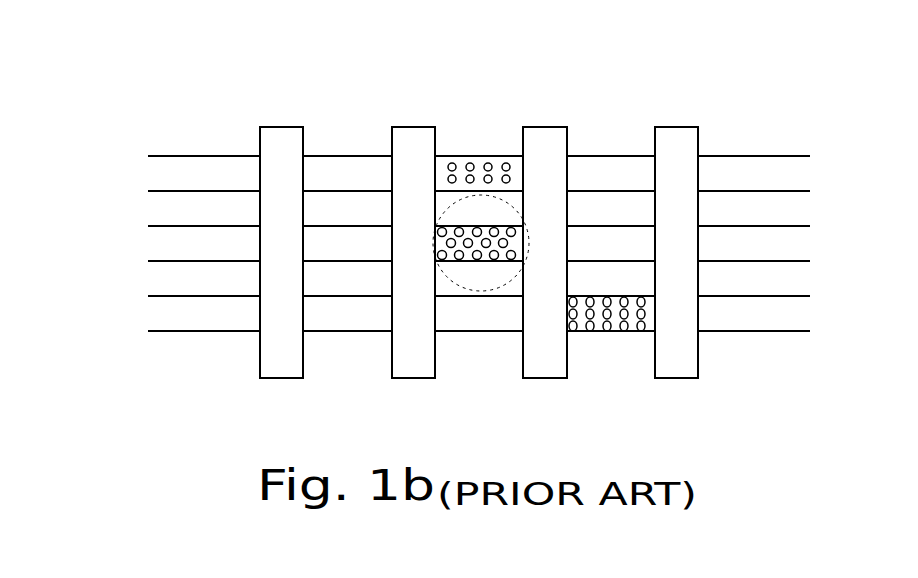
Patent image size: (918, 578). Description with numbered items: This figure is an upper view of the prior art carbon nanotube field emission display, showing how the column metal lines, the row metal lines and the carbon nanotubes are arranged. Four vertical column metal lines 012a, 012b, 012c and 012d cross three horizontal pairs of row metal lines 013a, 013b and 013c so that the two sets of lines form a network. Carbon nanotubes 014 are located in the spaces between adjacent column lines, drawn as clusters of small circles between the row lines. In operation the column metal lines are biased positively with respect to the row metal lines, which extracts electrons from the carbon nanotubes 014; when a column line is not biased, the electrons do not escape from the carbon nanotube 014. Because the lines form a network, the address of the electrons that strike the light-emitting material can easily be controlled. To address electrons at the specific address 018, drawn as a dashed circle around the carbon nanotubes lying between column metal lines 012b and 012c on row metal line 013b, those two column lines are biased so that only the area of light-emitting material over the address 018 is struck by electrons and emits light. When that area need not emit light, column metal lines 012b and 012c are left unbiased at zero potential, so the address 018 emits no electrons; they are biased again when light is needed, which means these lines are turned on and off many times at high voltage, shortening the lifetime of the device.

The column metal line 012a is at (284, 142).
The column metal line 012b is at (415, 142).
The column metal line 012c is at (547, 142).
The column metal line 012d is at (678, 142).
The row metal line 013a is at (185, 177).
The row metal line 013b is at (185, 248).
The row metal line 013c is at (185, 317).
The specific address 018 is at (423, 247).
The carbon nanotube 014 is at (607, 329).